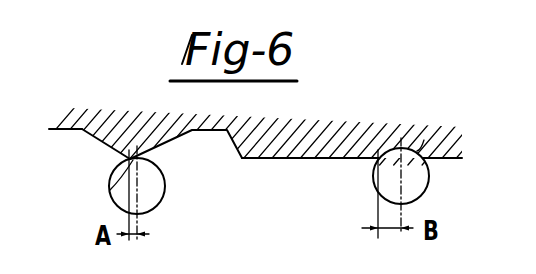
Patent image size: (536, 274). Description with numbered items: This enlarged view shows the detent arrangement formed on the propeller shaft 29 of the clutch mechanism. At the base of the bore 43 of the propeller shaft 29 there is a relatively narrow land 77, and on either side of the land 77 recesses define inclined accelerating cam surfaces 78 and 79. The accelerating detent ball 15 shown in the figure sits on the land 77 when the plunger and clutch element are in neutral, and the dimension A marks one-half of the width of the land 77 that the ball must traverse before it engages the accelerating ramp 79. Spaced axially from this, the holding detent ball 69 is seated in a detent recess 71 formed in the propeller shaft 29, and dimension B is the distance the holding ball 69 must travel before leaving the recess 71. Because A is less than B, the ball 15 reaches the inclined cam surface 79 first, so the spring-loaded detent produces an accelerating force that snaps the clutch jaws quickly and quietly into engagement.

The accelerating cam surface 79 is at (97, 139).
The land 77 is at (110, 190).
The ball 15 is at (163, 196).
The accelerating cam surface 78 is at (172, 139).
The bore 43 is at (270, 158).
The propeller shaft 29 is at (301, 166).
The detent recess 71 is at (424, 140).
The detent ball 69 is at (420, 180).